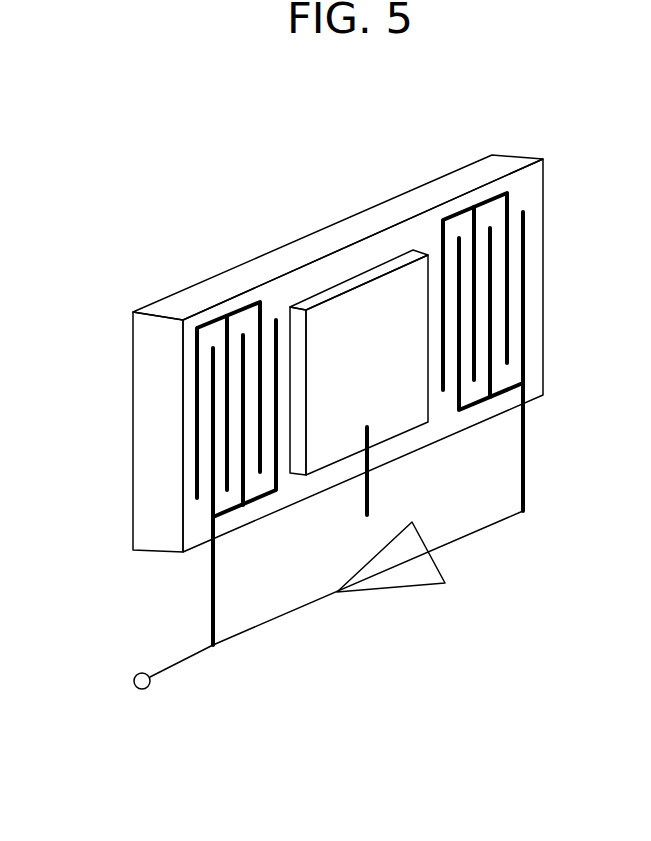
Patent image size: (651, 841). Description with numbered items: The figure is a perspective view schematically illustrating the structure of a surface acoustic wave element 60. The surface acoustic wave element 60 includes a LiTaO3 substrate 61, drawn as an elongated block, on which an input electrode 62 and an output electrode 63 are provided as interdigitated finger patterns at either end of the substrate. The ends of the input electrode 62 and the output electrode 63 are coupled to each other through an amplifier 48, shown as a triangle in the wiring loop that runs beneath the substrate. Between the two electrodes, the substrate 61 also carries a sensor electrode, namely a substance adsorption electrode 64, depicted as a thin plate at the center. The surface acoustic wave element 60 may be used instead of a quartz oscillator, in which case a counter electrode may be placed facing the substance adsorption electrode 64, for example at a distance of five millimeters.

The surface acoustic wave element 60 is at (293, 331).
The LiTaO3 substrate 61 is at (132, 427).
The input electrode 62 is at (470, 405).
The output electrode 63 is at (247, 500).
The substance adsorption electrode 64 is at (403, 438).
The amplifier 48 is at (442, 570).